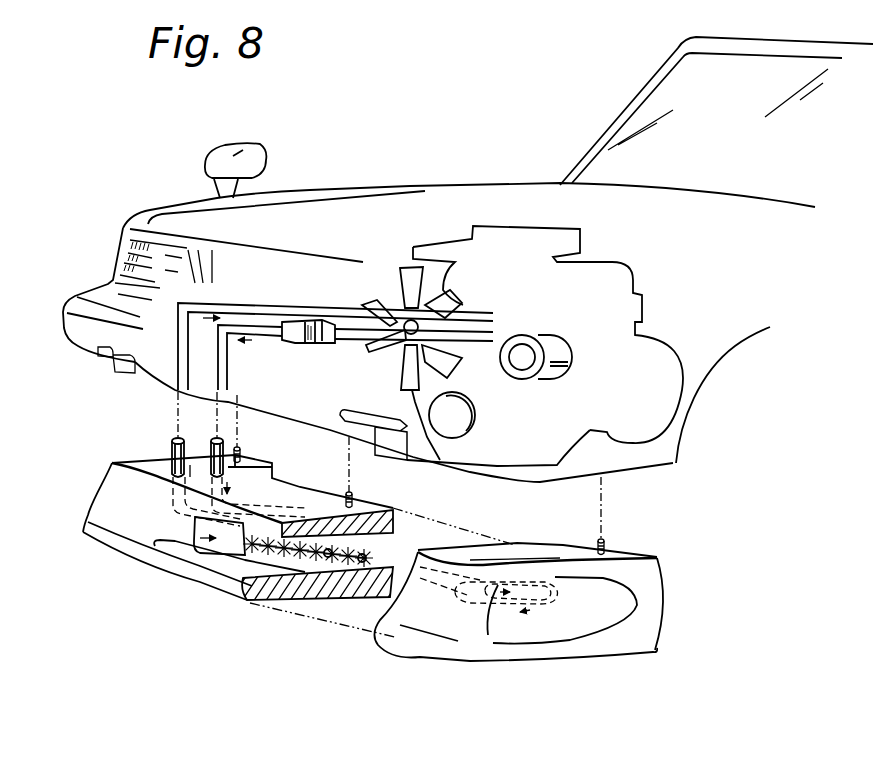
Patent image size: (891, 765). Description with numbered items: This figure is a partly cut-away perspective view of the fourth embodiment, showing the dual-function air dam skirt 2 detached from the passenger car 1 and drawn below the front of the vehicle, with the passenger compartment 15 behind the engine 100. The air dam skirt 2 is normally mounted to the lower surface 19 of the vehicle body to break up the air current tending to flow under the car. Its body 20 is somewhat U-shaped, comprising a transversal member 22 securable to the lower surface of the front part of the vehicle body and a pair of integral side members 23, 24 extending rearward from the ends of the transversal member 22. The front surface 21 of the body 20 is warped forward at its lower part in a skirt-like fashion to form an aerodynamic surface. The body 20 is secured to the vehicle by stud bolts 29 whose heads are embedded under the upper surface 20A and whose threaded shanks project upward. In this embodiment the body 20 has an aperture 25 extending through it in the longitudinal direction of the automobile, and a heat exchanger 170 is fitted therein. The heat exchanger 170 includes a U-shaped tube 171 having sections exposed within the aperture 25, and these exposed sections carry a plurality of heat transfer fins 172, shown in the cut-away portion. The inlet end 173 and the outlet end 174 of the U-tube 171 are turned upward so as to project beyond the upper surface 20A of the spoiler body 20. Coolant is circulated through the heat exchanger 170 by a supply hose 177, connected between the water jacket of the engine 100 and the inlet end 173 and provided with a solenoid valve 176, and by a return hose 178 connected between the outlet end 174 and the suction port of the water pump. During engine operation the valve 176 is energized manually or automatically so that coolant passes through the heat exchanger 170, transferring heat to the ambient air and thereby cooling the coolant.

The passenger car 1 is at (431, 170).
The air dam skirt 2 is at (80, 512).
The passenger compartment 15 is at (752, 159).
The lower surface of the vehicle body 19 is at (653, 468).
The body of the air dam skirt 20 is at (144, 566).
The upper surface of the body 20A is at (525, 552).
The front surface of the body 21 is at (173, 572).
The transversal member 22 is at (410, 623).
The side member 23 is at (560, 638).
The side member 24 is at (147, 466).
The aperture 25 is at (220, 560).
The stud bolts 29 is at (242, 452).
The engine 100 is at (540, 216).
The heat exchanger 170 is at (175, 542).
The U-shaped tube 171 is at (470, 600).
The heat transfer fins 172 is at (313, 557).
The inlet end 173 is at (223, 438).
The outlet end 174 is at (176, 439).
The solenoid valve 176 is at (326, 347).
The supply hose 177 is at (222, 362).
The return hose 178 is at (252, 310).